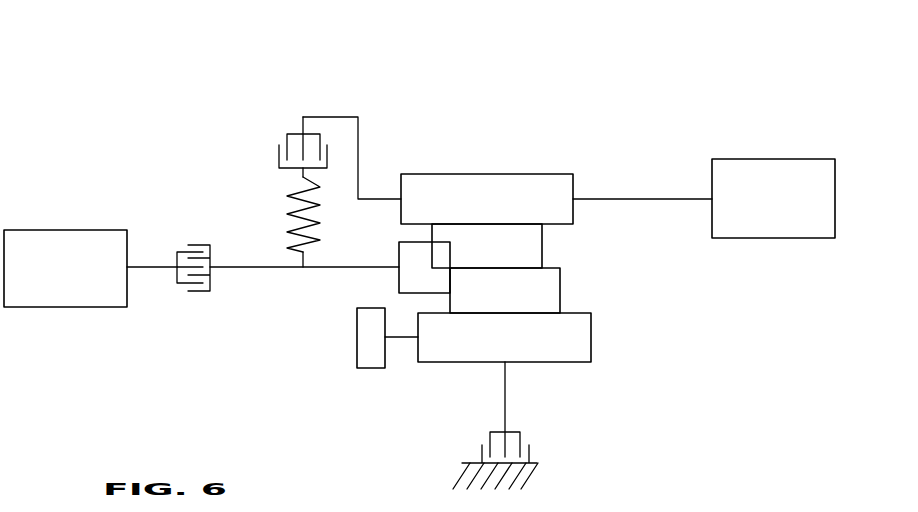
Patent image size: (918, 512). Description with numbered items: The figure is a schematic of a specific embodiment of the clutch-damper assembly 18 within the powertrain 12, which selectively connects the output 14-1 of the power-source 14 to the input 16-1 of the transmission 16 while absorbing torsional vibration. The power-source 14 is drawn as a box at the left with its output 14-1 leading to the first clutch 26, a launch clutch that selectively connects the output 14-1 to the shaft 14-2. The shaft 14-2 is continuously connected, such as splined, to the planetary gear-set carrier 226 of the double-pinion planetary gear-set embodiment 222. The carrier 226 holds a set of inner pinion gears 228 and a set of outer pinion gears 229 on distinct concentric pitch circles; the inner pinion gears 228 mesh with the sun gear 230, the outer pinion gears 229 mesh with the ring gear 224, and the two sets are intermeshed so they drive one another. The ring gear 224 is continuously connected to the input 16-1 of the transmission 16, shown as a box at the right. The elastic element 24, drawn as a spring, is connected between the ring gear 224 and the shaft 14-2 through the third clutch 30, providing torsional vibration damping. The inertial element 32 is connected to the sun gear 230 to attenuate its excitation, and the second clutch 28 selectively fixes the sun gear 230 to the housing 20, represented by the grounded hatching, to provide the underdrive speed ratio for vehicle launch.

The powertrain 12 is at (137, 87).
The power-source 14 is at (65, 268).
The output of the power-source 14-1 is at (163, 267).
The shaft 14-2 is at (235, 267).
The first clutch 26 is at (213, 250).
The elastic element 24 is at (287, 230).
The third clutch 30 is at (298, 130).
The clutch-damper assembly 18 is at (465, 185).
The ring gear 224 is at (488, 174).
The set of outer pinion gears 229 is at (542, 247).
The planetary gear-set carrier 226 is at (399, 277).
The set of inner pinion gears 228 is at (560, 292).
The sun gear 230 is at (560, 362).
The planetary gear-set embodiment 222 is at (568, 339).
The inertial element 32 is at (370, 368).
The second clutch 28 is at (497, 431).
The housing 20 is at (473, 463).
The input of the transmission 16-1 is at (651, 198).
The transmission 16 is at (773, 198).